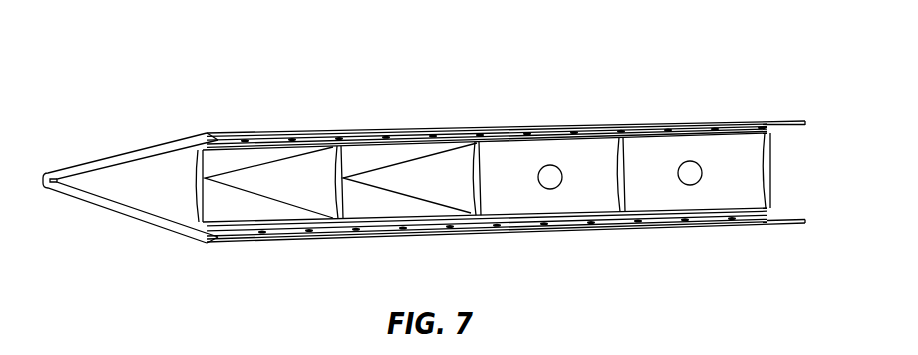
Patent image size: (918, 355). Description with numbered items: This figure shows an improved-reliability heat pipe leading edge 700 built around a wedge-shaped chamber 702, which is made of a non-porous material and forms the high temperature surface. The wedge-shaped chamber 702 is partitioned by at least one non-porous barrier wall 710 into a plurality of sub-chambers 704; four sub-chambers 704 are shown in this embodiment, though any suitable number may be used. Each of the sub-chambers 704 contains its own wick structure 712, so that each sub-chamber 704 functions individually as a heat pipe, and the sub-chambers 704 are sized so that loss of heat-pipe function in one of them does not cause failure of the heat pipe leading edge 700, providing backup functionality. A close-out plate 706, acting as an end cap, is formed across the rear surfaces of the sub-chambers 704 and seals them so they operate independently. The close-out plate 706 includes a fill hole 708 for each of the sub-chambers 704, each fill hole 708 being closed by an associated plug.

The improved-reliability heat pipe leading edge 700 is at (509, 43).
The wedge-shaped chamber 702 is at (130, 155).
The sub-chambers 704 is at (264, 177).
The close-out plate 706 is at (513, 193).
The fill hole 708 is at (551, 177).
The non-porous barrier wall 710 is at (337, 218).
The wick structure 712 is at (312, 197).